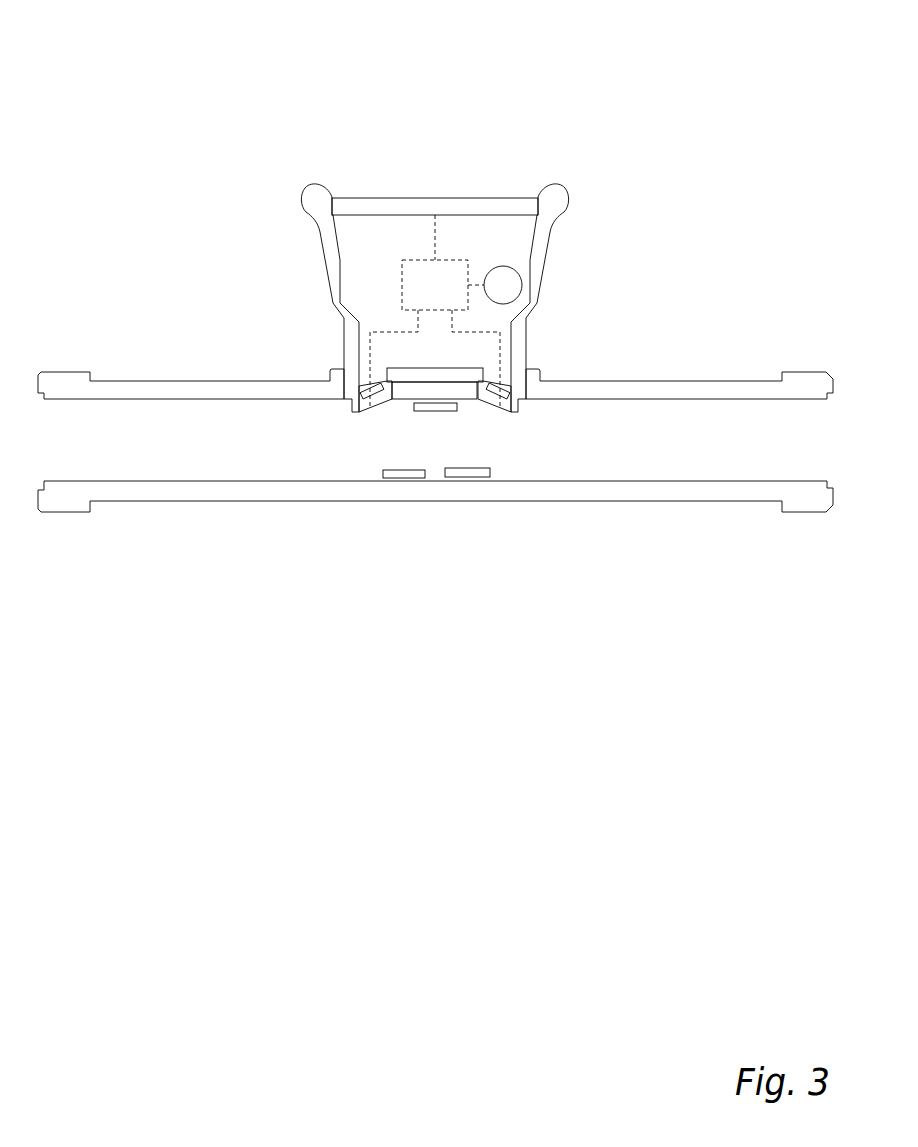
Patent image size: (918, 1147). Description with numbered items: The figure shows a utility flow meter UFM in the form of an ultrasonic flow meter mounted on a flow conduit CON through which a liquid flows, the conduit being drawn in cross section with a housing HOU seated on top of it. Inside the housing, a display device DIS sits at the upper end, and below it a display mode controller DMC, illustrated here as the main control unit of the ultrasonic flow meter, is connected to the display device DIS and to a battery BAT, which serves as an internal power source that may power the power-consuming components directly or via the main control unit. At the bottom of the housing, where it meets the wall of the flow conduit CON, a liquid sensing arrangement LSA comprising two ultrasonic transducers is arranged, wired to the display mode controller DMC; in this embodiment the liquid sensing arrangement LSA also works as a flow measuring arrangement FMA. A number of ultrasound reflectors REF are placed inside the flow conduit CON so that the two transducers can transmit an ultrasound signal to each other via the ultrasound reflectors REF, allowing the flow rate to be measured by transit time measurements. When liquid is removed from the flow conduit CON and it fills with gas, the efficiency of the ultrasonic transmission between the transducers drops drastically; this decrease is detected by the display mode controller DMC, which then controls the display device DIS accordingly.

The utility flow meter UFM is at (252, 127).
The housing HOU is at (329, 278).
The display device DIS is at (407, 198).
The display mode controller DMC is at (463, 299).
The battery BAT is at (512, 287).
The flow conduit CON is at (168, 436).
The liquid sensing arrangement LSA is at (370, 408).
The flow measuring arrangement FMA is at (500, 408).
The ultrasound reflector REF is at (420, 412).